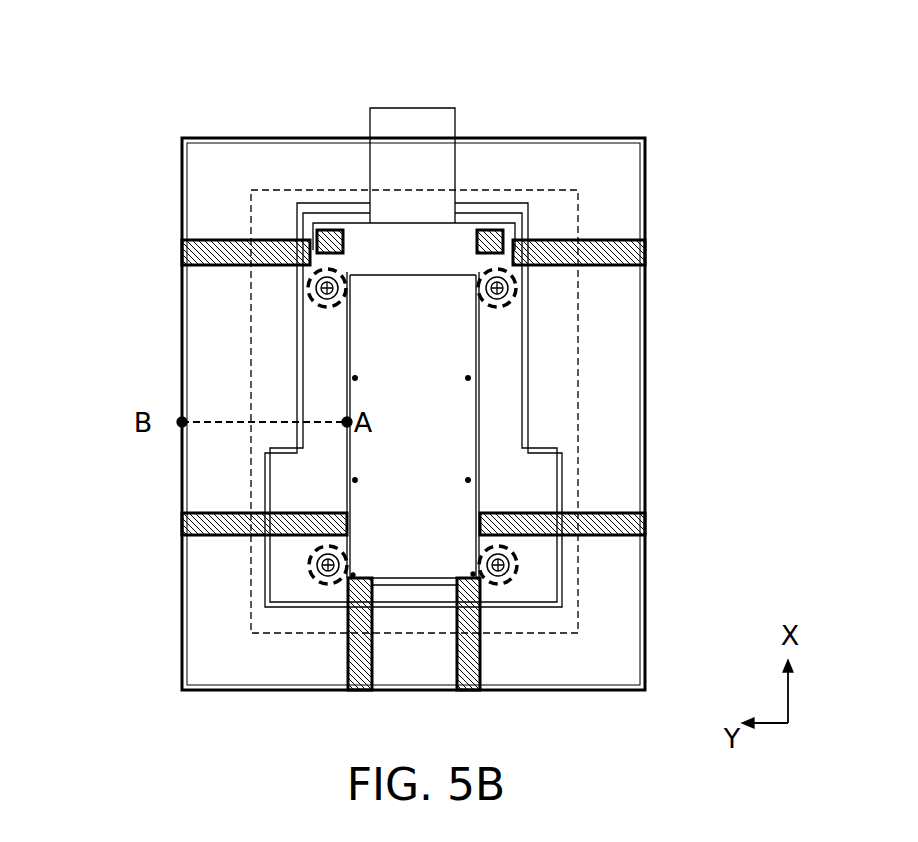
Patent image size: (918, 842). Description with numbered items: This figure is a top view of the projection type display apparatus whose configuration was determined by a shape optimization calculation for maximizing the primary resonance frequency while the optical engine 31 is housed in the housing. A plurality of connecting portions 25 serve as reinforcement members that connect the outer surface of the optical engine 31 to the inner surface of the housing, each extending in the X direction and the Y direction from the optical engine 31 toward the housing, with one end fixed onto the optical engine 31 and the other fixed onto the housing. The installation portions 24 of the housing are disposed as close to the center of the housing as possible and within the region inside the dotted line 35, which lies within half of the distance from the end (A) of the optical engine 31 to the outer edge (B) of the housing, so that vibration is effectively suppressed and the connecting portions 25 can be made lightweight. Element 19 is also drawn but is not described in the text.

The connector tab 19 is at (413, 125).
The installation portion 24 is at (318, 265).
The connecting portion 25 is at (330, 233).
The optical engine 31 is at (427, 435).
The dotted line 35 is at (252, 380).